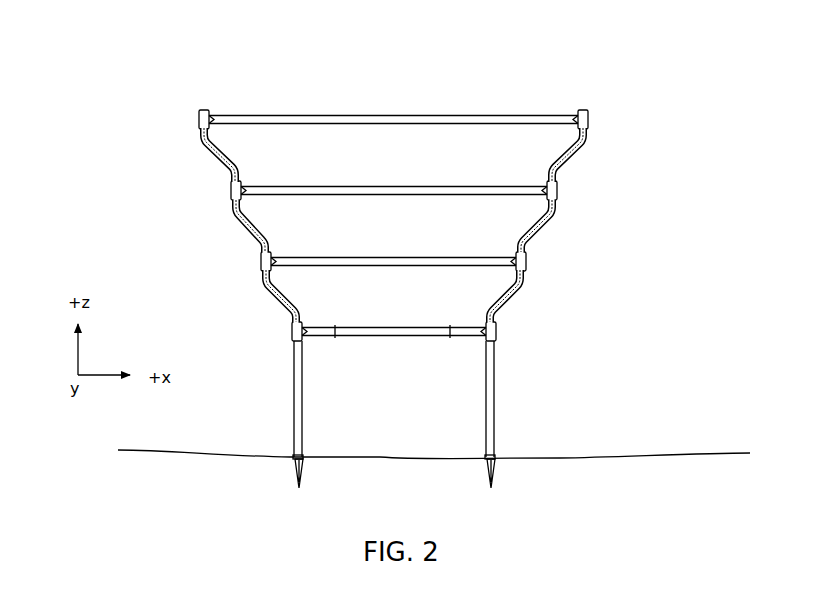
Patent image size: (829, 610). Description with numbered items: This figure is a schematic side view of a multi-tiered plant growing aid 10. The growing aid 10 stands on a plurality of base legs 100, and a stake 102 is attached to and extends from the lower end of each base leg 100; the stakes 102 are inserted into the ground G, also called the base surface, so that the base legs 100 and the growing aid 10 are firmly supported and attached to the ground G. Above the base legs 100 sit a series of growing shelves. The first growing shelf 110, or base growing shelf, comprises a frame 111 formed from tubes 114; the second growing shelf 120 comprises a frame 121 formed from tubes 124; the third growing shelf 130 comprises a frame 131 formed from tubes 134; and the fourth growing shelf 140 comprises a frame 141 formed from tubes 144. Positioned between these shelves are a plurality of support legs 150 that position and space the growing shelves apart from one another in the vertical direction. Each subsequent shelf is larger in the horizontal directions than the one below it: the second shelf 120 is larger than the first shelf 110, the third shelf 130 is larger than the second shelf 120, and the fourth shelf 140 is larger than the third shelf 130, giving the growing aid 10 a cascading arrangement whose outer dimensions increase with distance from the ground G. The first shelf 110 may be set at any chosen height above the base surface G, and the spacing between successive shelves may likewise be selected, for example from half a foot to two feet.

The multi-tiered plant growing aid 10 is at (649, 62).
The base legs 100 is at (294, 398).
The stake 102 is at (290, 474).
The first growing shelf 110 is at (506, 332).
The frame 111 is at (447, 318).
The tubes 114 is at (386, 327).
The second growing shelf 120 is at (536, 262).
The frame 121 is at (470, 249).
The tubes 124 is at (376, 258).
The third growing shelf 130 is at (567, 189).
The frame 131 is at (473, 178).
The tubes 134 is at (376, 187).
The fourth growing shelf 140 is at (596, 121).
The frame 141 is at (492, 107).
The tubes 144 is at (362, 116).
The support legs 150 is at (208, 159).
The ground G is at (582, 457).